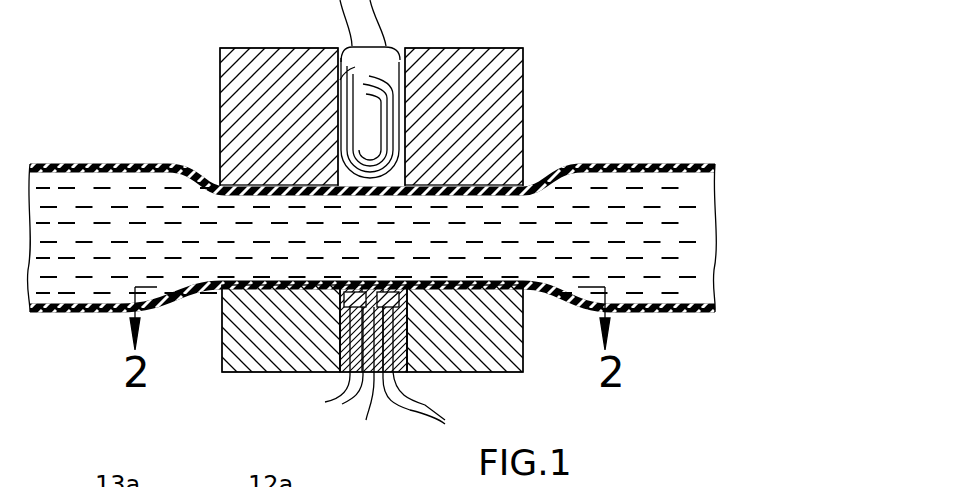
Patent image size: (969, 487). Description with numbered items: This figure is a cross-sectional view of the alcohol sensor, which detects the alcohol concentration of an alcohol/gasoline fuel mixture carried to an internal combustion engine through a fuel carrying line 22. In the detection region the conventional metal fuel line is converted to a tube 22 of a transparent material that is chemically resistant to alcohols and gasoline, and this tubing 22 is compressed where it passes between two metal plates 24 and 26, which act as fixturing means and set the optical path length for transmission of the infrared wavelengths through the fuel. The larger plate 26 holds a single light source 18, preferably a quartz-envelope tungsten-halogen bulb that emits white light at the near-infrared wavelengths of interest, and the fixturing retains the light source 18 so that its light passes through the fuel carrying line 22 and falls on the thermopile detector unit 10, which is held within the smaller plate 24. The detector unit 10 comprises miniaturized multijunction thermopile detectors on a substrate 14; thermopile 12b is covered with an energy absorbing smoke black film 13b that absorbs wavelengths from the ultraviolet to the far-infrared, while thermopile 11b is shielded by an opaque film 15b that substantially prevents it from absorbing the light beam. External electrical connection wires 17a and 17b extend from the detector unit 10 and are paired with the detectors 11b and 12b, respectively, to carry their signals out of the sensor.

The thermopile detector unit 10 is at (326, 305).
The thermopile detector 11b is at (355, 292).
The thermopile detector 12b is at (393, 292).
The smoke black film 13b is at (421, 332).
The substrate 14 is at (365, 377).
The opaque film 15b is at (345, 320).
The external electrical connection wire 17a is at (345, 407).
The external electrical connection wire 17b is at (437, 371).
The light source 18 is at (369, 88).
The fuel carrying line 22 is at (650, 310).
The metal plate 24 is at (483, 372).
The metal plate 26 is at (225, 92).